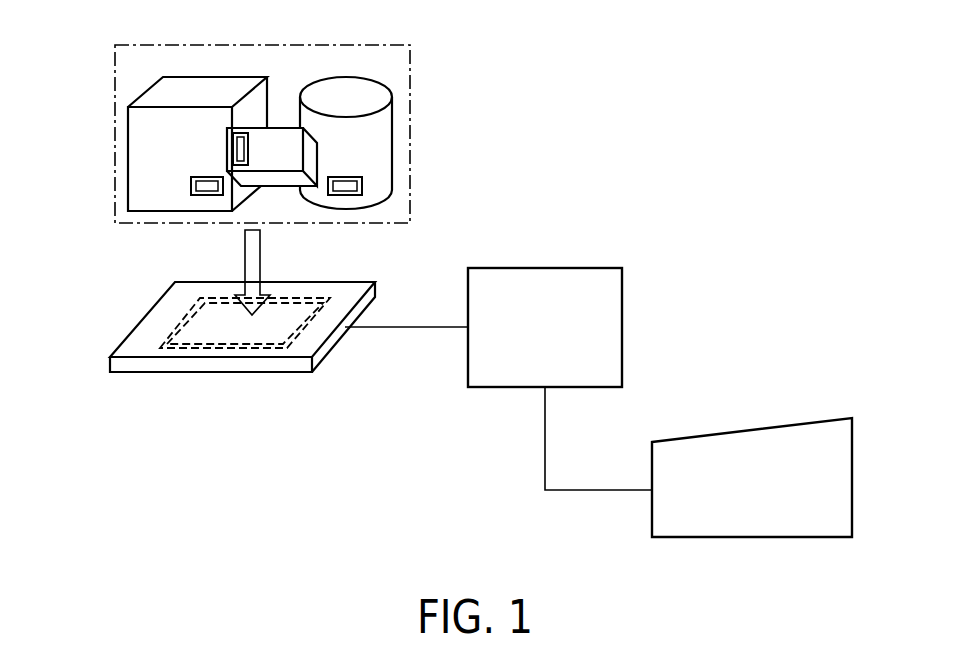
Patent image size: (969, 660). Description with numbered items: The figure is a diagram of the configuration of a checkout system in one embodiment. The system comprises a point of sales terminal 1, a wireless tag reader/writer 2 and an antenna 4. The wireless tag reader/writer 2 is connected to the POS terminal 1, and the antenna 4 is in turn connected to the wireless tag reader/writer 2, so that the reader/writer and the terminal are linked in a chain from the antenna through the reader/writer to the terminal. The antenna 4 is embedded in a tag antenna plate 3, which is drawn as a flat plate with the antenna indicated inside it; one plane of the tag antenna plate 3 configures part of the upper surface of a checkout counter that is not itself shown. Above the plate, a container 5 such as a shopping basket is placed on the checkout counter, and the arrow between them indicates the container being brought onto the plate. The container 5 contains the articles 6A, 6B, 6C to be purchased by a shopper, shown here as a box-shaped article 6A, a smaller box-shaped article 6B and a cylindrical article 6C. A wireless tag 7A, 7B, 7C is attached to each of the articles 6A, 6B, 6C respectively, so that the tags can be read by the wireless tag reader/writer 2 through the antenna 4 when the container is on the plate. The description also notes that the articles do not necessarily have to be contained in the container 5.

The point of sales (POS) terminal 1 is at (852, 487).
The wireless tag reader/writer 2 is at (622, 333).
The tag antenna plate 3 is at (177, 373).
The antenna 4 is at (254, 348).
The container 5 is at (115, 101).
The article 6A is at (128, 170).
The article 6B is at (282, 127).
The article 6C is at (392, 131).
The wireless tag 7A is at (203, 195).
The wireless tag 7B is at (248, 150).
The wireless tag 7C is at (362, 186).